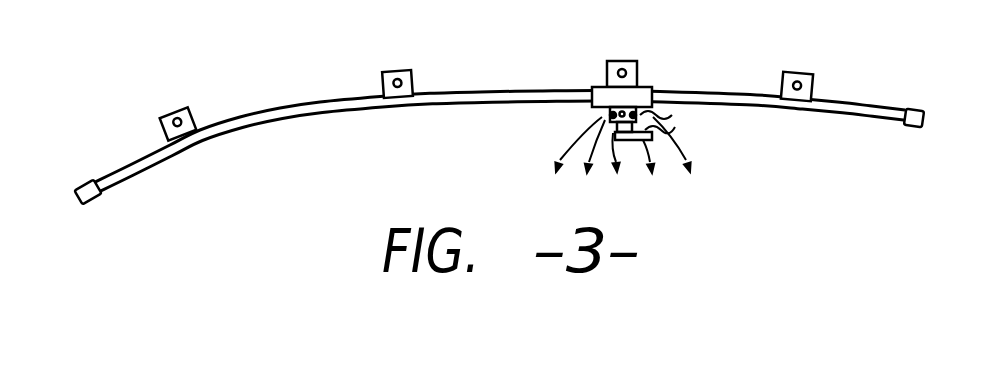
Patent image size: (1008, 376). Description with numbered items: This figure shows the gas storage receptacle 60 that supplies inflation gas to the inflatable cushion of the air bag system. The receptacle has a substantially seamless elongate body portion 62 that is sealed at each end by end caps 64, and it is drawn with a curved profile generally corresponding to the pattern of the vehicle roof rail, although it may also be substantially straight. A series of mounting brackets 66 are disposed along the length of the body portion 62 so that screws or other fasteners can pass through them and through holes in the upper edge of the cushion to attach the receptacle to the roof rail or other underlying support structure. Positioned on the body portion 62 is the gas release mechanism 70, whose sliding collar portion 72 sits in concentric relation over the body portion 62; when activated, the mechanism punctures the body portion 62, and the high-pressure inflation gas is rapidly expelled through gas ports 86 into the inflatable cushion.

The gas storage receptacle 60 is at (494, 103).
The elongate body portion 62 is at (508, 92).
The end caps 64 is at (85, 182).
The mounting brackets 66 is at (176, 107).
The gas release mechanism 70 is at (584, 103).
The sliding collar portion 72 is at (653, 88).
The gas ports 86 is at (641, 140).